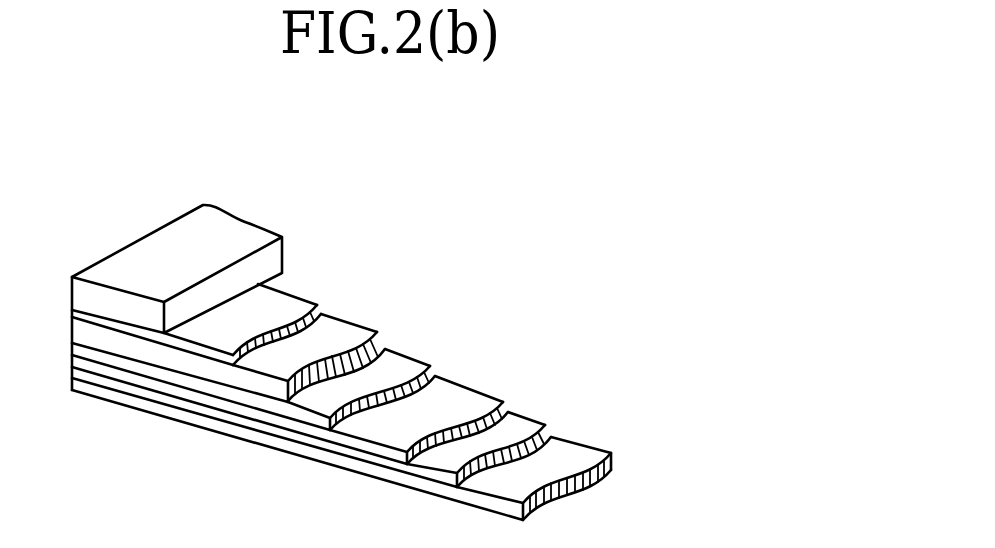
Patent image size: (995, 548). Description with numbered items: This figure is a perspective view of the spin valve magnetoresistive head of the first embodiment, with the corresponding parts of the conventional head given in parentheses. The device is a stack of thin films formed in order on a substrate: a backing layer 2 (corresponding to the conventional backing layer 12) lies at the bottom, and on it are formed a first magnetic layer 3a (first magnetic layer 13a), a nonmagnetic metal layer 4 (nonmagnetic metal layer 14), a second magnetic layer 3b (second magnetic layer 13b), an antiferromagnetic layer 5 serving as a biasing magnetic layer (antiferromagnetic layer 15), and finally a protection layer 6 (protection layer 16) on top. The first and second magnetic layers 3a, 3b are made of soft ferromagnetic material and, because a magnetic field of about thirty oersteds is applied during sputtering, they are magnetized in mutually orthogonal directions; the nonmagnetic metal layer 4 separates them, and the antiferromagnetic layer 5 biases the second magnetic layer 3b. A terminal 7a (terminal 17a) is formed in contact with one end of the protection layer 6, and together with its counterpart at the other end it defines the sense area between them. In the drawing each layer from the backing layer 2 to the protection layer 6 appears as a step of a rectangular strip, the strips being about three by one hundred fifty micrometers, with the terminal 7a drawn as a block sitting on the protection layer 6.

The backing layer 2 is at (570, 457).
The backing layer 12 is at (416, 455).
The first magnetic layer 3a is at (515, 414).
The first magnetic layer 13a is at (395, 421).
The nonmagnetic metal layer 4 is at (448, 403).
The nonmagnetic metal layer 14 is at (322, 388).
The second magnetic layer 3b is at (387, 367).
The second magnetic layer 13b is at (329, 345).
The antiferromagnetic layer 5 is at (337, 330).
The antiferromagnetic layer 15 is at (267, 302).
The protection layer 6 is at (297, 301).
The protection layer 16 is at (220, 265).
The terminal 7a is at (160, 238).
The terminal 17a is at (177, 203).